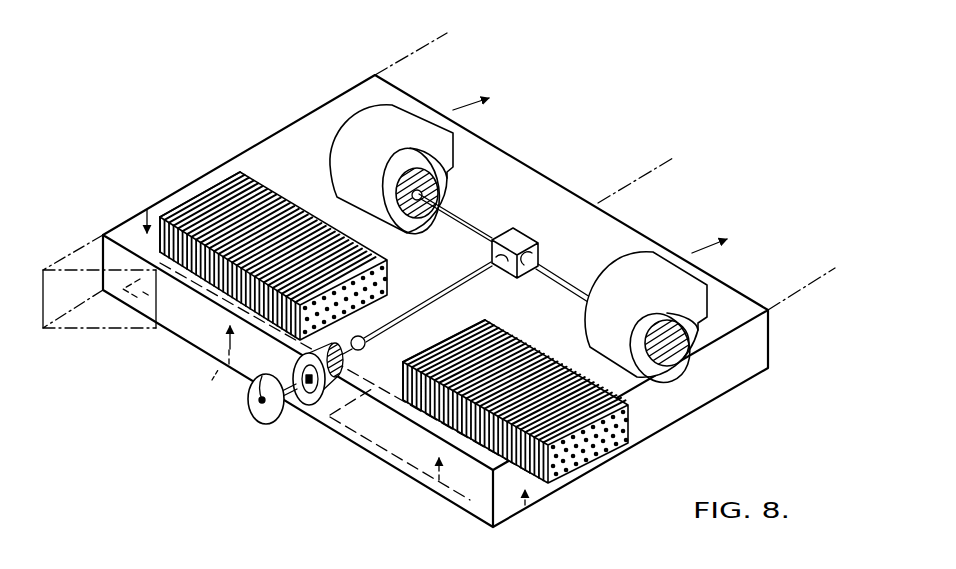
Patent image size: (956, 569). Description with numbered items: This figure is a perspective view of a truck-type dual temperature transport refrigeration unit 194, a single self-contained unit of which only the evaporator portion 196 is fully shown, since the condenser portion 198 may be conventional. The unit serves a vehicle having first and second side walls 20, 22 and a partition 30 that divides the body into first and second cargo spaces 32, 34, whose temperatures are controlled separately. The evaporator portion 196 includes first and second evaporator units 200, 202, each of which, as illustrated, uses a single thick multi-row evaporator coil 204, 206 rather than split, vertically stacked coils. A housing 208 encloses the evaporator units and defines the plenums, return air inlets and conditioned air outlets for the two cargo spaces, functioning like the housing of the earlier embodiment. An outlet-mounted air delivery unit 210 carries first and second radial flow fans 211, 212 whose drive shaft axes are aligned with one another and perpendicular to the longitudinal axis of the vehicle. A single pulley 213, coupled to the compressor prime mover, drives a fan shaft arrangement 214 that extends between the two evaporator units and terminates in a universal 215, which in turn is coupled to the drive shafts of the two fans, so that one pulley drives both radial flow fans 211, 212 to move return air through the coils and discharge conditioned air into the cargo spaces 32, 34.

The first side wall 20 is at (816, 274).
The second side wall 22 is at (413, 50).
The partition 30 is at (650, 172).
The first cargo space 32 is at (773, 212).
The second cargo space 34 is at (560, 77).
The dual temperature transport refrigeration unit 194 is at (334, 510).
The evaporator portion 196 is at (238, 155).
The condenser portion 198 is at (87, 243).
The first evaporator unit 200 is at (520, 342).
The second evaporator unit 202 is at (307, 213).
The evaporator coil 204 is at (630, 414).
The evaporator coil 206 is at (388, 274).
The housing 208 is at (709, 404).
The air delivery unit 210 is at (511, 195).
The first radial flow fan 211 is at (633, 275).
The second radial flow fan 212 is at (367, 130).
The pulley 213 is at (263, 418).
The fan shaft arrangement 214 is at (502, 315).
The universal 215 is at (520, 232).